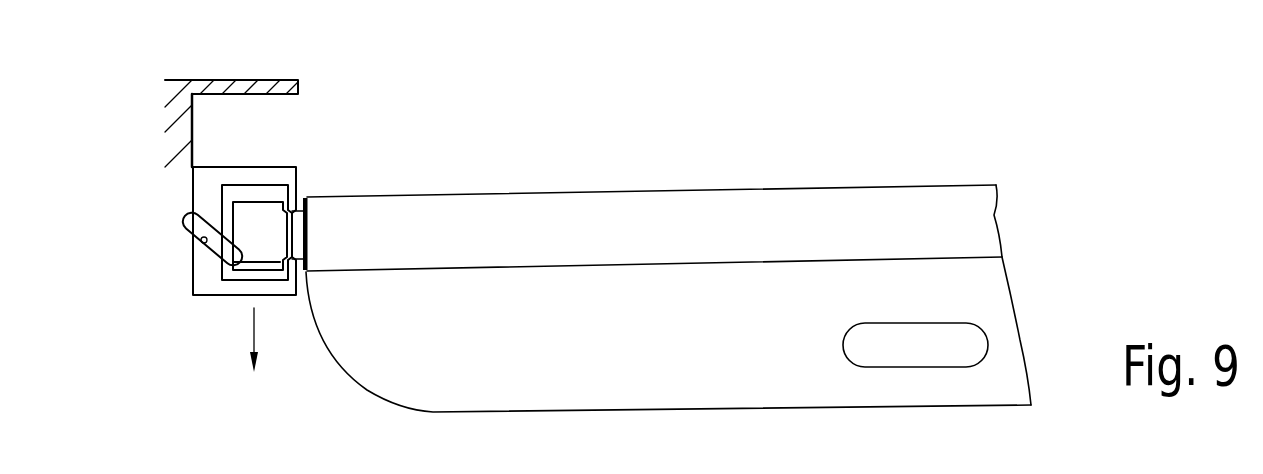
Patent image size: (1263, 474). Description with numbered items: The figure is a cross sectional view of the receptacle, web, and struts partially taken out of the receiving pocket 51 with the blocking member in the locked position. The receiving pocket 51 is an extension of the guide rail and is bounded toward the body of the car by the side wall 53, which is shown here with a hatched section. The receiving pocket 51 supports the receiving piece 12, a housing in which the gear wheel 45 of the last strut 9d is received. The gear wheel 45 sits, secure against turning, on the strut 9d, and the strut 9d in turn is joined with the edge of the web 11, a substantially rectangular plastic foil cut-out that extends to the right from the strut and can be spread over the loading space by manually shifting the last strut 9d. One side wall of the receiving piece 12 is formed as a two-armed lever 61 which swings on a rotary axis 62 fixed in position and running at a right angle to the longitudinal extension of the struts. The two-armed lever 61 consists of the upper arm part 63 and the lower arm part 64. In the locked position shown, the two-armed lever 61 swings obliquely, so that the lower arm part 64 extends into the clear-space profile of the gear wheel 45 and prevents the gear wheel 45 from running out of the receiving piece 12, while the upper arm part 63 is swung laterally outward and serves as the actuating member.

The last strut 9d is at (308, 218).
The web 11 is at (840, 222).
The receiving piece 12 is at (218, 178).
The gear wheel 45 is at (265, 218).
The receiving pocket 51 is at (282, 112).
The side wall 53 is at (197, 124).
The two-armed lever 61 is at (155, 246).
The rotary axis 62 is at (193, 250).
The upper arm part 63 is at (182, 217).
The lower arm part 64 is at (232, 268).